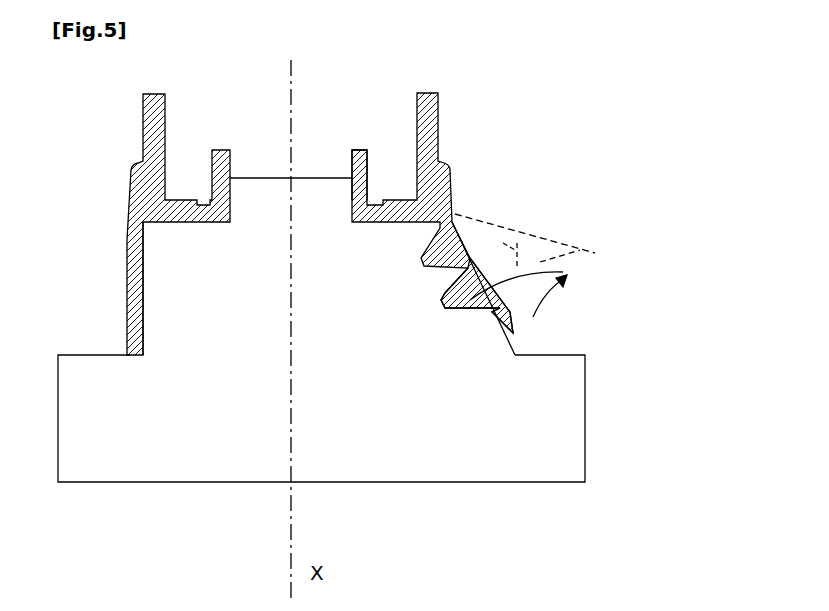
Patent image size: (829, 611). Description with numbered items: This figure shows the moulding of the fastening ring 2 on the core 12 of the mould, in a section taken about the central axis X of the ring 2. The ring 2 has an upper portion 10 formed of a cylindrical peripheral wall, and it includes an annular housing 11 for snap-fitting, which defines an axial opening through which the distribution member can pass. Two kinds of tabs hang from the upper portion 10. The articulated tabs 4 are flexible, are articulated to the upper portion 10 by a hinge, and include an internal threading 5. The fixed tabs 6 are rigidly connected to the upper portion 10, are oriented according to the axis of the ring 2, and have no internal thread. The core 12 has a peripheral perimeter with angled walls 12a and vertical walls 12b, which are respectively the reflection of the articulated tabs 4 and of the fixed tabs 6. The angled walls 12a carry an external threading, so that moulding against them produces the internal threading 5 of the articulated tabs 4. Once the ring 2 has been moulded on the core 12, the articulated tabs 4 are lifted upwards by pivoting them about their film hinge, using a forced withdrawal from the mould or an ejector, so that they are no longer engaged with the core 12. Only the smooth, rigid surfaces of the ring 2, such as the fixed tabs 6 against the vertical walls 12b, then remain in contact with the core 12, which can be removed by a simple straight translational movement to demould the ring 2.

The fastening ring 2 is at (595, 137).
The articulated tabs 4 is at (563, 272).
The internal threading 5 is at (458, 252).
The fixed tabs 6 is at (126, 282).
The upper portion 10 is at (442, 163).
The annular housing 11 is at (371, 162).
The core 12 is at (333, 353).
The angled walls 12a is at (427, 285).
The vertical walls 12b is at (147, 297).